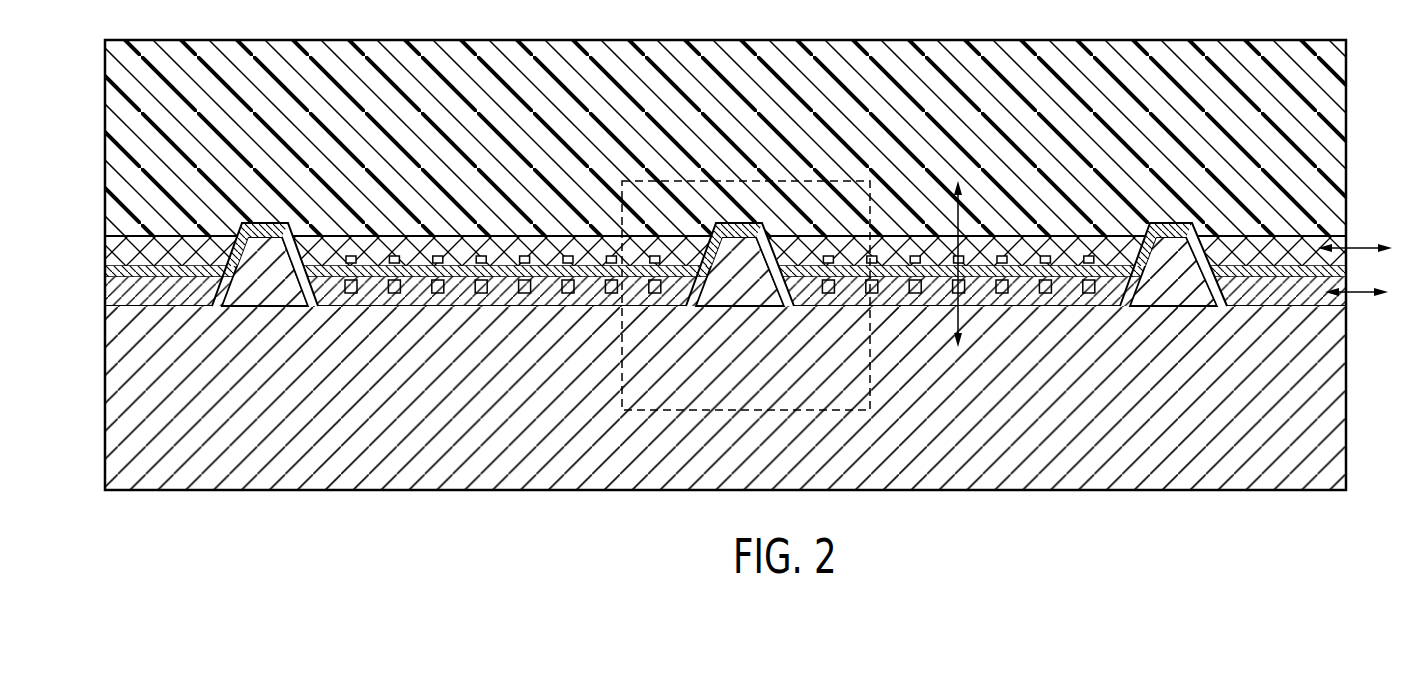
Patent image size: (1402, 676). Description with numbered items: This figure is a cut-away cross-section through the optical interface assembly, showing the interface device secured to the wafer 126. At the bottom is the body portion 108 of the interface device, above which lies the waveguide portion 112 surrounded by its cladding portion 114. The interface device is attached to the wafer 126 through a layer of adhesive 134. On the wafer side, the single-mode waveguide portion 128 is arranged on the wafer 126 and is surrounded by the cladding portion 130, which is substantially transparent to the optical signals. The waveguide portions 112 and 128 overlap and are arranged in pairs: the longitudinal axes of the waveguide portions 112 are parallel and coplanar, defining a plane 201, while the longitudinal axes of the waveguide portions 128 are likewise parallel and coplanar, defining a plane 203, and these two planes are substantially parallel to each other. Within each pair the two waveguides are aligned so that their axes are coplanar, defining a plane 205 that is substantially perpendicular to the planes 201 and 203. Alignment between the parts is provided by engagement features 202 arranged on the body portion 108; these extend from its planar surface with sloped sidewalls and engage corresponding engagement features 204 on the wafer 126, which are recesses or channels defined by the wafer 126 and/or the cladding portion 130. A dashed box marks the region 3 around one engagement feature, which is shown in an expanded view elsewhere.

The wafer 126 is at (112, 125).
The cladding portion 130 is at (112, 240).
The adhesive 134 is at (112, 272).
The cladding portion 114 is at (112, 302).
The body portion 108 is at (112, 410).
The waveguide portion 128 is at (438, 255).
The waveguide portion 112 is at (437, 294).
The engagement features 202 is at (266, 286).
The engagement features 204 is at (252, 214).
The plane 205 is at (960, 312).
The plane 203 is at (1356, 248).
The plane 201 is at (1356, 292).
The region 3 is at (833, 412).